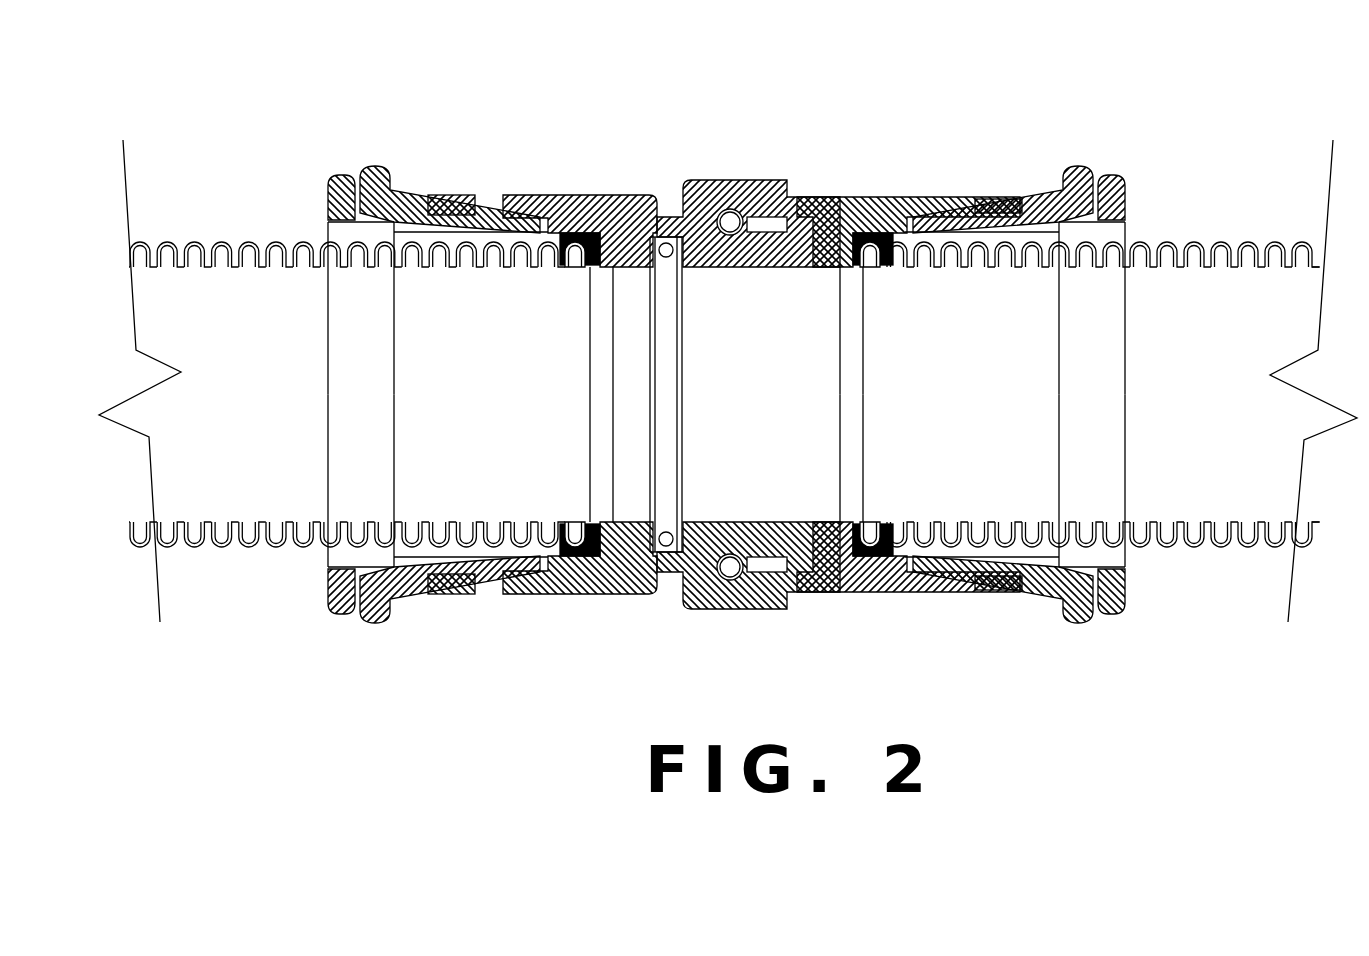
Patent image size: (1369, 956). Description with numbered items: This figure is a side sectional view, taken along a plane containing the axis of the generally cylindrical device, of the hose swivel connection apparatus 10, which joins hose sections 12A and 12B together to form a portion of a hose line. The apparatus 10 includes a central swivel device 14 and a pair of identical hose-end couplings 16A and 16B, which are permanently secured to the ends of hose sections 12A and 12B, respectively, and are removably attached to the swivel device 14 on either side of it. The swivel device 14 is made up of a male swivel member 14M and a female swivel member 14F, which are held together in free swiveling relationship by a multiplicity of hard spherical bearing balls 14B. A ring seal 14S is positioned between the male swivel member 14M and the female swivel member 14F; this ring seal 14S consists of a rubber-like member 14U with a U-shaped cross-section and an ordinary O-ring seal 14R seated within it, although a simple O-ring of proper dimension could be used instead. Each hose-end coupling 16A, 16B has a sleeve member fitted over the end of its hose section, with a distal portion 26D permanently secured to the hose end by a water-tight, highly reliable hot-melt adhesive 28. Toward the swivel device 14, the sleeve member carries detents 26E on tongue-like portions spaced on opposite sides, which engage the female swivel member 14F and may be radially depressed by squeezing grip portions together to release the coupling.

The hose swivel connection apparatus 10 is at (1015, 101).
The hose section 12A is at (250, 242).
The hose section 12B is at (1170, 243).
The swivel device 14 is at (820, 193).
The spherical bearing balls 14B is at (725, 217).
The female swivel member 14F is at (548, 193).
The male swivel member 14M is at (872, 193).
The O-ring seal 14R is at (676, 535).
The ring seal 14S is at (690, 360).
The rubber-like member 14U is at (668, 262).
The hose-end coupling 16A is at (330, 197).
The hose-end coupling 16B is at (960, 590).
The distal portion 26D is at (613, 217).
The detent 26E is at (500, 218).
The hot-melt adhesive 28 is at (857, 220).